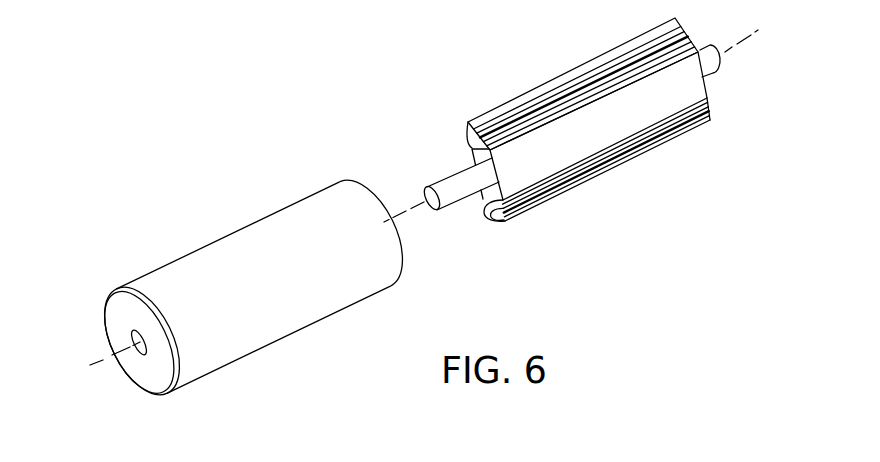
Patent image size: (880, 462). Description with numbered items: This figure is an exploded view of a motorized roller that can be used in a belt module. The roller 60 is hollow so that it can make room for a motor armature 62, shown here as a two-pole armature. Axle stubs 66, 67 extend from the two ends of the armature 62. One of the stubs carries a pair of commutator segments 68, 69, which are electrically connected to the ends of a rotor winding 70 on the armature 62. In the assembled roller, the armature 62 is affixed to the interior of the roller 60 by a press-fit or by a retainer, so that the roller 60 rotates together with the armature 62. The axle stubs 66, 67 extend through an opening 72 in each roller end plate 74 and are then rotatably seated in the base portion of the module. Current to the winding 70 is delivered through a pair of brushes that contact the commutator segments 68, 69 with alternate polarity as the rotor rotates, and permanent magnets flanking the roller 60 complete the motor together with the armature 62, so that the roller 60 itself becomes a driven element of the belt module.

The roller 60 is at (296, 318).
The motor armature 62 is at (563, 163).
The axle stub 66 is at (436, 211).
The axle stub 67 is at (712, 73).
The commutator segment 68 is at (454, 176).
The commutator segment 69 is at (463, 199).
The rotor winding 70 is at (617, 67).
The opening 72 is at (141, 358).
The roller end plate 74 is at (117, 313).